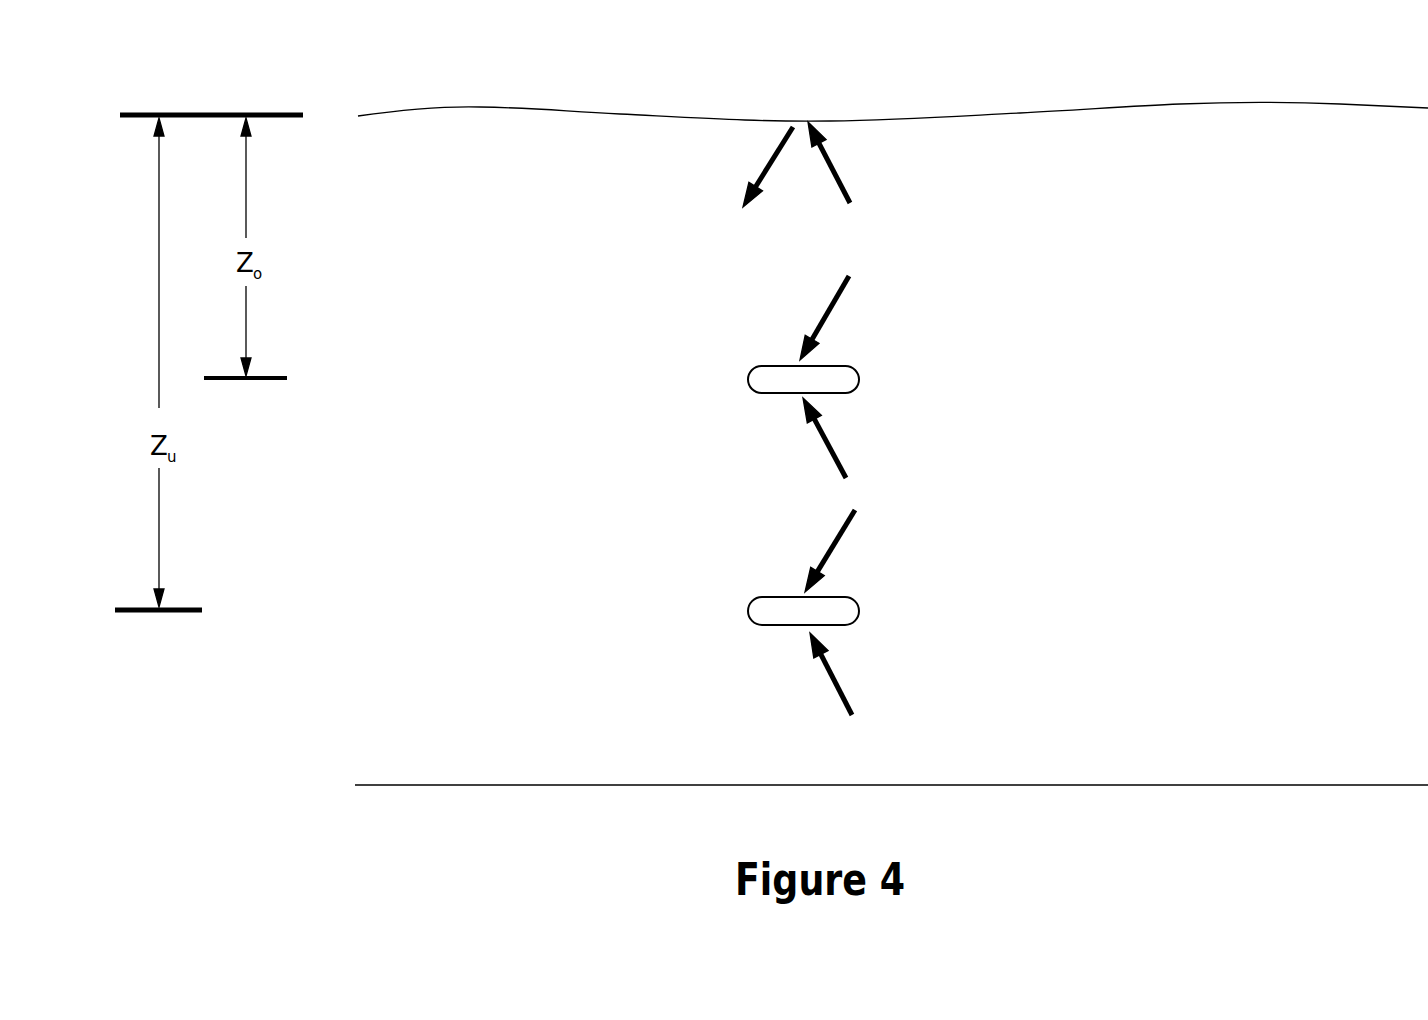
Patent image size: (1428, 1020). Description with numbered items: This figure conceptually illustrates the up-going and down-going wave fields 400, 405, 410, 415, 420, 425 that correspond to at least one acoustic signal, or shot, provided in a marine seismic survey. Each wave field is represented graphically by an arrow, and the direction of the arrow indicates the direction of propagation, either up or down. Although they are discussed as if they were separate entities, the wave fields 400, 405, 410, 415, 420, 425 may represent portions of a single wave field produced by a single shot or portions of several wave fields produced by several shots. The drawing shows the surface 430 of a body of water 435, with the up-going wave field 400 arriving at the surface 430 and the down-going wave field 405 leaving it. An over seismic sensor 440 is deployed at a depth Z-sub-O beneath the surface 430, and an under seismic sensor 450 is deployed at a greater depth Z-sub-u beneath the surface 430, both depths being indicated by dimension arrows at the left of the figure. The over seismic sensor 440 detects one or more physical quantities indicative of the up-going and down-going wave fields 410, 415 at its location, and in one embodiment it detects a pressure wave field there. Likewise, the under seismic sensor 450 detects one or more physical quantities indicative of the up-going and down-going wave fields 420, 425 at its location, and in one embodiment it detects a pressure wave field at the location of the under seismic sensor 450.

The up-going wave field 400 is at (838, 172).
The down-going wave field 405 is at (775, 152).
The up-going wave field 410 is at (829, 442).
The down-going wave field 415 is at (829, 318).
The up-going wave field 420 is at (835, 675).
The down-going wave field 425 is at (833, 548).
The surface 430 is at (1205, 103).
The body of water 435 is at (1234, 373).
The over seismic sensor 440 is at (748, 379).
The under seismic sensor 450 is at (748, 610).